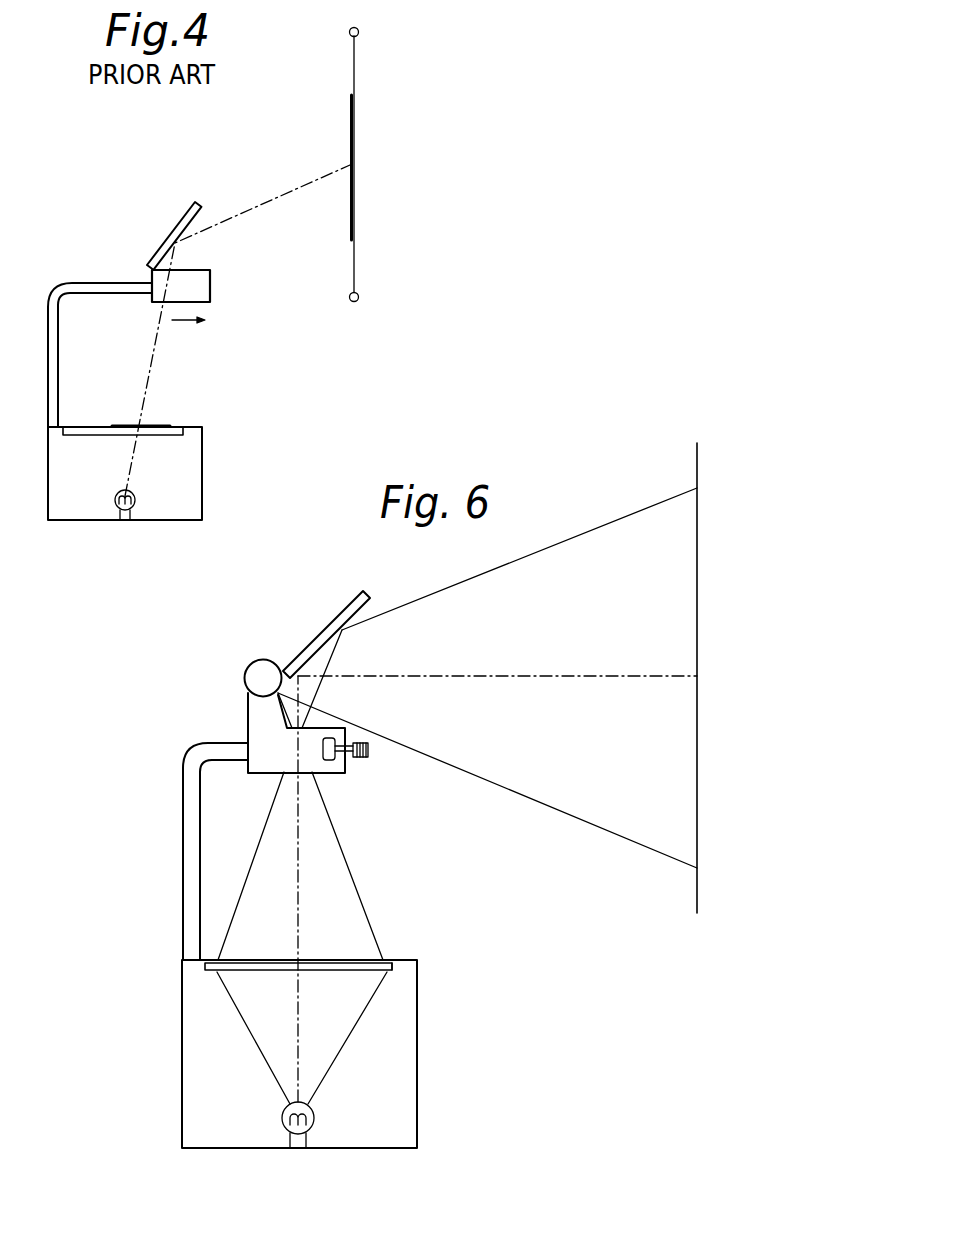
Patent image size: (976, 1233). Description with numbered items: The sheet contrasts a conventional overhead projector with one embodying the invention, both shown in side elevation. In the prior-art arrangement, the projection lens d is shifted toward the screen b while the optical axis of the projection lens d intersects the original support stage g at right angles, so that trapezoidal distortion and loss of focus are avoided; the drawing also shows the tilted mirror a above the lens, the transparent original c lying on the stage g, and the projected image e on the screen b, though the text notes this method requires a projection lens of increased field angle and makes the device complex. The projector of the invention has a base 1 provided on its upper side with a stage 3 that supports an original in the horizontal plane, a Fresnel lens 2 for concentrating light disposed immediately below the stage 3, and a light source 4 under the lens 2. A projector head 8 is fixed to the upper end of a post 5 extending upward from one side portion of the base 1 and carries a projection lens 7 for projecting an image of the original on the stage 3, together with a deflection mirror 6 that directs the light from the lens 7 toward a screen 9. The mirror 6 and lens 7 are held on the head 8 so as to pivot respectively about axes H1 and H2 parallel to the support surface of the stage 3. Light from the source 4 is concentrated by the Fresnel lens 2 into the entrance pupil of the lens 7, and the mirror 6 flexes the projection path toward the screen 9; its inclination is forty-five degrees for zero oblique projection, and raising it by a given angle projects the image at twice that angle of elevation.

In FIG. 4, the mirror a is at (212, 219).
In FIG. 4, the screen b is at (351, 86).
In FIG. 4, the transparency c is at (156, 424).
In FIG. 4, the projection lens d is at (211, 284).
In FIG. 4, the projected image e is at (349, 216).
In FIG. 4, the original support stage g is at (183, 426).
In FIG. 6, the base 1 is at (182, 1052).
In FIG. 6, the Fresnel lens 2 is at (394, 967).
In FIG. 6, the stage 3 is at (337, 960).
In FIG. 6, the light source 4 is at (317, 1117).
In FIG. 6, the post 5 is at (183, 895).
In FIG. 6, the deflection mirror 6 is at (372, 598).
In FIG. 6, the projection lens 7 is at (338, 759).
In FIG. 6, the projector head 8 is at (241, 723).
In FIG. 6, the screen 9 is at (697, 480).
In FIG. 6, the pivot axis of mirror H1 is at (262, 681).
In FIG. 6, the pivot axis of projection lens H2 is at (300, 748).